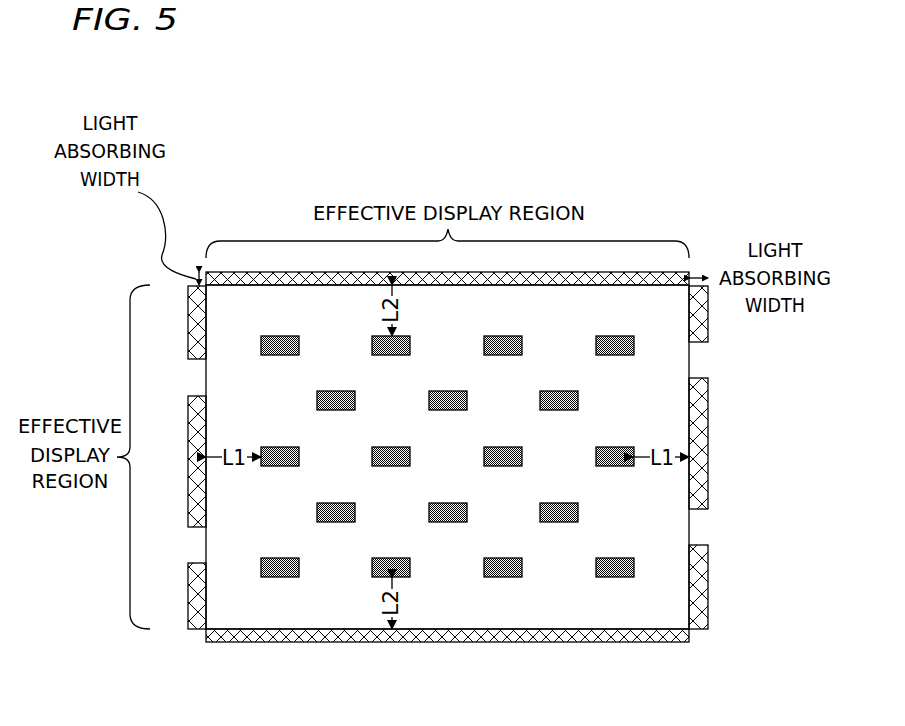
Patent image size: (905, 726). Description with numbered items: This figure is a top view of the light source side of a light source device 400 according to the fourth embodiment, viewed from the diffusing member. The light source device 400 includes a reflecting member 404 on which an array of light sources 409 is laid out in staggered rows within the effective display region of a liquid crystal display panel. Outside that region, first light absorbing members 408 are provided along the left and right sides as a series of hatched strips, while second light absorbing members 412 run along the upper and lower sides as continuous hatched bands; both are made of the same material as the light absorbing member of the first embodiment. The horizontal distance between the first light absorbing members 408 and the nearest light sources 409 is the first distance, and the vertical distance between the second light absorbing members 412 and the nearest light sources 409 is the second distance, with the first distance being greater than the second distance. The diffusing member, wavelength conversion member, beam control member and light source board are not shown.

The light source device 400 is at (454, 448).
The reflecting member 404 is at (658, 602).
The first light absorbing members 408 is at (200, 425).
The light sources 409 is at (280, 565).
The second light absorbing members 412 is at (689, 272).